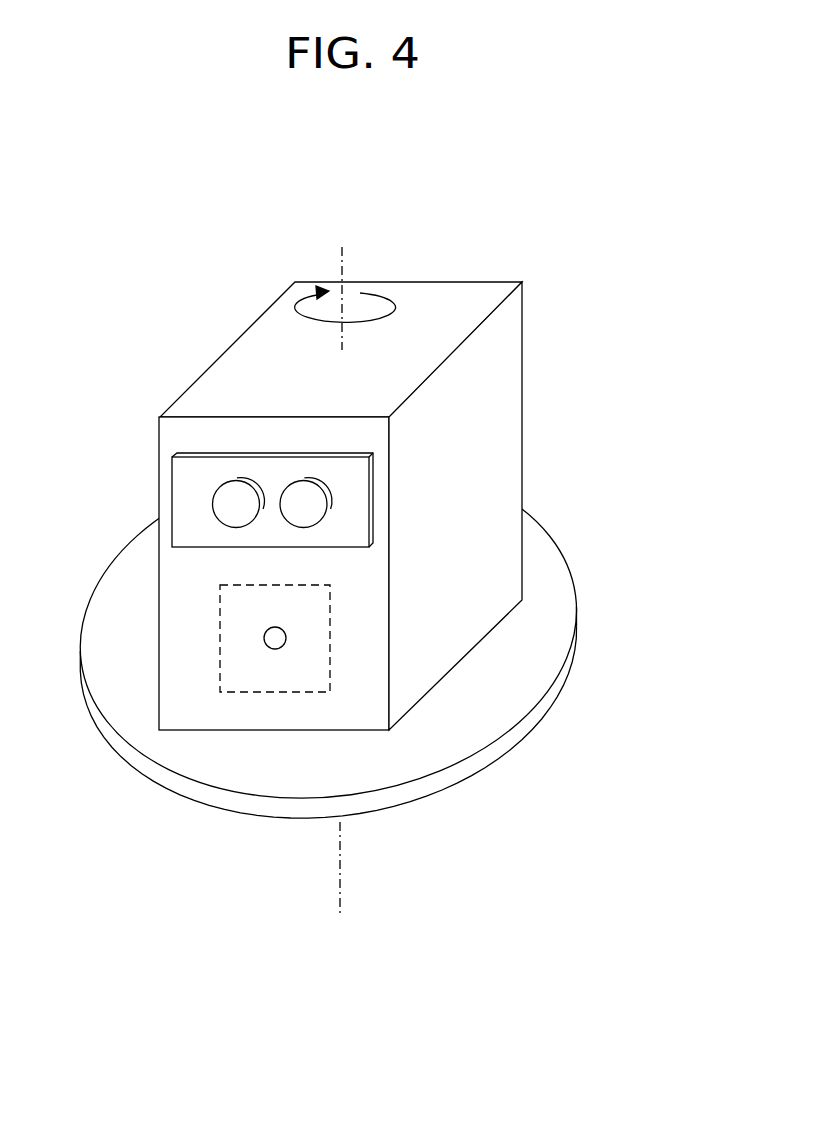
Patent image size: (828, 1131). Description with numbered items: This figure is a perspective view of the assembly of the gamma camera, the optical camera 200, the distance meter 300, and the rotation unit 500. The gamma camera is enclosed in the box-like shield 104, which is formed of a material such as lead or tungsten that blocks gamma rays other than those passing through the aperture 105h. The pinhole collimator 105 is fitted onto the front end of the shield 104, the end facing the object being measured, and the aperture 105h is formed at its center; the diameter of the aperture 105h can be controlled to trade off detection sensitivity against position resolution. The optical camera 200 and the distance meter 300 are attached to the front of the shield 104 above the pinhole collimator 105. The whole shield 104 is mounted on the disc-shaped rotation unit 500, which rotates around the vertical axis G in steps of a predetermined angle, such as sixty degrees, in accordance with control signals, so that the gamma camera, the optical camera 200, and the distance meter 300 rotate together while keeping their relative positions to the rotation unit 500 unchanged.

The shield 104 is at (447, 295).
The optical camera 200 is at (237, 503).
The distance meter 300 is at (308, 503).
The pinhole collimator 105 is at (330, 638).
The aperture 105h is at (275, 638).
The rotation unit 500 is at (420, 755).
The axis G is at (345, 576).